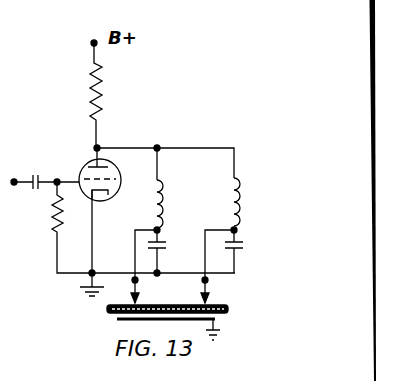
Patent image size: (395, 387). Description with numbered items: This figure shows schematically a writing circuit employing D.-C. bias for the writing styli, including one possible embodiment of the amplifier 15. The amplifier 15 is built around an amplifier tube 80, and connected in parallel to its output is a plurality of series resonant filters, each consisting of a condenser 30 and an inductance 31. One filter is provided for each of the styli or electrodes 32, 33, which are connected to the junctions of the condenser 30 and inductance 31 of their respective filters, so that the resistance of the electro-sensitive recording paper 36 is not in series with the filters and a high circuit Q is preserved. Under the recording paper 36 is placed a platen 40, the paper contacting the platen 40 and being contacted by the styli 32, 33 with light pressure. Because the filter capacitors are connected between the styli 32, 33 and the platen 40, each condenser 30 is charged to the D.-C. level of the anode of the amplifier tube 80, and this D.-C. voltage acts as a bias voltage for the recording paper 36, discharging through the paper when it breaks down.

The amplifier 15 is at (72, 163).
The amplifier tube 80 is at (106, 193).
The inductance 31 is at (159, 191).
The condenser 30 is at (164, 242).
The stylus 32 is at (138, 292).
The stylus 33 is at (210, 292).
The electro-sensitive recording paper 36 is at (229, 310).
The platen 40 is at (217, 319).